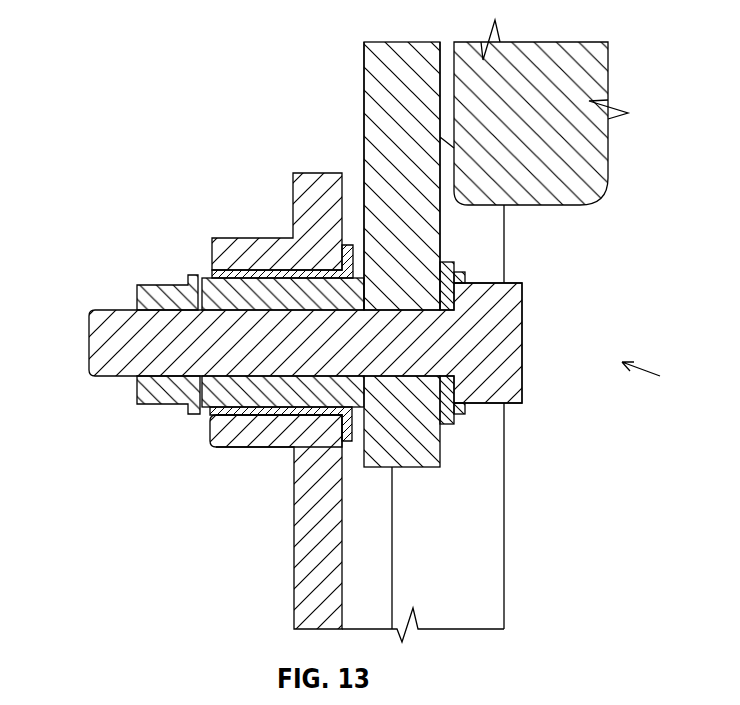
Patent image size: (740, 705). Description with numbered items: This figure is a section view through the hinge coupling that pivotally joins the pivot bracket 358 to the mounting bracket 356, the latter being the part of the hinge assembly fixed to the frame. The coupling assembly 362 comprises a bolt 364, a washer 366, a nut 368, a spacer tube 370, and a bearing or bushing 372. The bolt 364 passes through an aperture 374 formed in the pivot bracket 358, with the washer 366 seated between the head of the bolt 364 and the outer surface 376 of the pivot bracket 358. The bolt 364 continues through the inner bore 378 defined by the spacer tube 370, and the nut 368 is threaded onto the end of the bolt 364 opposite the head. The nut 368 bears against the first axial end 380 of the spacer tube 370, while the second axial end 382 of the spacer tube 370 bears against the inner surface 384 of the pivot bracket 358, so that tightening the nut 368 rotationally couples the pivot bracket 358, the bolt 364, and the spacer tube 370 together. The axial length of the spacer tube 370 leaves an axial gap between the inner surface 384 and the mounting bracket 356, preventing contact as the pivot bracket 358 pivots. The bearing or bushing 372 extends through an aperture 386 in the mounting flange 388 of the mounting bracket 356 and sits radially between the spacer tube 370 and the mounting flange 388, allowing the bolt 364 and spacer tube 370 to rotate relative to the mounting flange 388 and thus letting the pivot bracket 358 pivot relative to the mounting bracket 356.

The mounting bracket 356 is at (308, 588).
The pivot bracket 358 is at (385, 58).
The coupling assembly 362 is at (665, 377).
The bolt 364 is at (100, 340).
The washer 366 is at (450, 283).
The nut 368 is at (147, 390).
The spacer tube 370 is at (215, 292).
The bearing 372 is at (282, 419).
The aperture 374 is at (412, 373).
The outer surface 376 is at (440, 225).
The inner bore 378 is at (212, 414).
The first axial end 380 is at (195, 300).
The second axial end 382 is at (368, 396).
The inner surface 384 is at (363, 110).
The aperture 386 is at (233, 270).
The mounting flange 388 is at (278, 240).